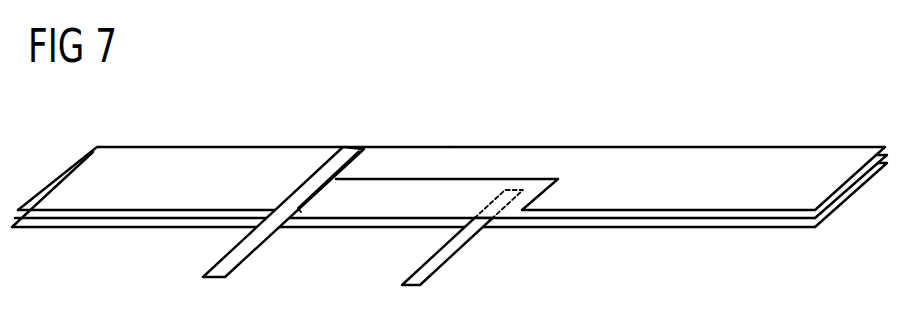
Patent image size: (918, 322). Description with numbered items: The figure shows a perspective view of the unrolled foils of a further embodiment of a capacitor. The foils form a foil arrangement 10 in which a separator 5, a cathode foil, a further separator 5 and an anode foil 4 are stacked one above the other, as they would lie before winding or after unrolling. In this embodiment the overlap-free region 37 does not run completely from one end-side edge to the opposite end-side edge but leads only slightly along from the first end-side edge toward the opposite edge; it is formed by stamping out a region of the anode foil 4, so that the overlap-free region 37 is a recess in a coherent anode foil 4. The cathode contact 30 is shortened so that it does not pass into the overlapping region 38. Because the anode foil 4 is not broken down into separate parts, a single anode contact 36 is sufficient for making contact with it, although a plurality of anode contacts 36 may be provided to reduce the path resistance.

The foil arrangement 10 is at (449, 167).
The anode foil 4 is at (227, 167).
The separator 5 is at (642, 216).
The cathode contact 30 is at (431, 260).
The anode contact 36 is at (229, 259).
The overlap-free region 37 is at (427, 181).
The overlapping region 38 is at (625, 163).